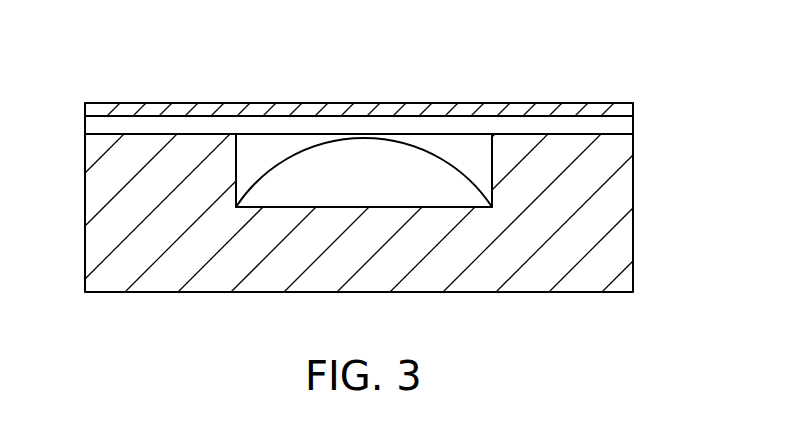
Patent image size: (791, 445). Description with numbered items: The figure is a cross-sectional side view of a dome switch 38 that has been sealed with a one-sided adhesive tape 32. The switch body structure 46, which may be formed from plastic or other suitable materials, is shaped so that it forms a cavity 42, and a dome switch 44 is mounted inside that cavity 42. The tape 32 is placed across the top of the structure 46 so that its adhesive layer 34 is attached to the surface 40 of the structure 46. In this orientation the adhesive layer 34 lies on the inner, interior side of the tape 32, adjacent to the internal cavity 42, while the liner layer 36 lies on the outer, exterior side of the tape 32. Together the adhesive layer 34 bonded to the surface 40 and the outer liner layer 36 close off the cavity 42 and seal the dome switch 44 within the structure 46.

The one-sided adhesive tape 32 is at (355, 118).
The adhesive layer 34 is at (628, 126).
The liner layer 36 is at (628, 112).
The dome switch 38 is at (618, 51).
The surface 40 is at (107, 137).
The cavity 42 is at (278, 153).
The dome switch 44 is at (423, 167).
The switch body structure 46 is at (158, 281).